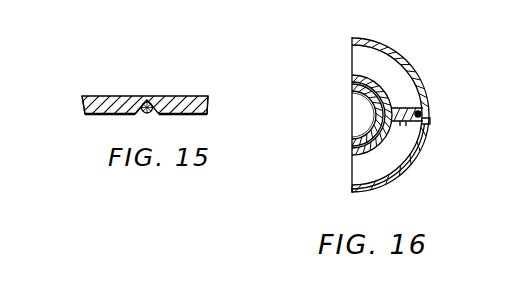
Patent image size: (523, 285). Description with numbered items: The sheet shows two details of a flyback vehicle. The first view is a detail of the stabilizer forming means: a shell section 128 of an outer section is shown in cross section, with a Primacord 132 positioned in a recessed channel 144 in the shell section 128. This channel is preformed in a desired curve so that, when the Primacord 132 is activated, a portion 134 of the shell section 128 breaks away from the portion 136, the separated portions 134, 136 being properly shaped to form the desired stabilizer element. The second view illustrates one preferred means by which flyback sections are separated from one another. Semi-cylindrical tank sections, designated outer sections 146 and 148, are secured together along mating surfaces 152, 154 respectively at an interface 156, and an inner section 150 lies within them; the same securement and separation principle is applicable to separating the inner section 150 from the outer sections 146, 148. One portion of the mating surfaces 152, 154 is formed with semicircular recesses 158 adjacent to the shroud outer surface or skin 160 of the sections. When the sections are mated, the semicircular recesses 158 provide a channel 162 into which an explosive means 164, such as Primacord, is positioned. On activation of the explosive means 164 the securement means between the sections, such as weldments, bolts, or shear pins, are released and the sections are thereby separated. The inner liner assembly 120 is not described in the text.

In FIG. 15, the shell section 128 is at (186, 81).
In FIG. 15, the Primacord 132 is at (149, 114).
In FIG. 15, the portion of shell section 134 is at (82, 108).
In FIG. 15, the portion of shell section 136 is at (207, 105).
In FIG. 15, the recessed channel 144 is at (143, 120).
In FIG. 16, the outer section 146 is at (381, 58).
In FIG. 16, the outer section 148 is at (378, 193).
In FIG. 16, the inner liner assembly 120 is at (355, 85).
In FIG. 16, the inner section 150 is at (372, 110).
In FIG. 16, the mating surface 152 is at (358, 89).
In FIG. 16, the mating surface 154 is at (367, 141).
In FIG. 16, the interface 156 is at (410, 121).
In FIG. 16, the semicircular recesses 158 is at (410, 104).
In FIG. 16, the shroud outer surface or skin 160 is at (413, 177).
In FIG. 16, the channel 162 is at (422, 114).
In FIG. 16, the explosive means 164 is at (430, 123).